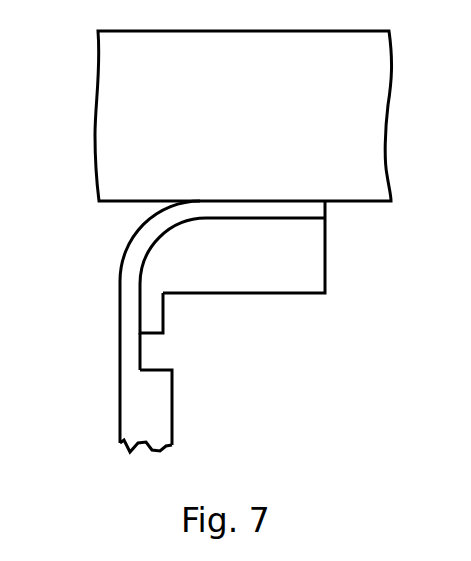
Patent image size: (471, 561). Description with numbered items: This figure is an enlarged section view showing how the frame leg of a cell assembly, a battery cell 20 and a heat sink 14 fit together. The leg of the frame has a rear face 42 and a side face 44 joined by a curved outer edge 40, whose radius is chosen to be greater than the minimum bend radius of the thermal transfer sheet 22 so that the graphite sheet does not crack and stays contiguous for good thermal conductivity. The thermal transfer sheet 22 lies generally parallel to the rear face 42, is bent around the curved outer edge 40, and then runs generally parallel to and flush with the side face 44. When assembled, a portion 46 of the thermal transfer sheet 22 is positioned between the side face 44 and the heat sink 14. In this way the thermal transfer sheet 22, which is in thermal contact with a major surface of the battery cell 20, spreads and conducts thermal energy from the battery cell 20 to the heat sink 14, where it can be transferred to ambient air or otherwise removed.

The heat sink 14 is at (142, 163).
The curved outer edge 40 is at (140, 260).
The rear face 42 is at (138, 313).
The thermal transfer sheet 22 is at (128, 371).
The portion of thermal transfer sheet 46 is at (267, 210).
The side face 44 is at (297, 219).
The battery cell 20 is at (161, 412).